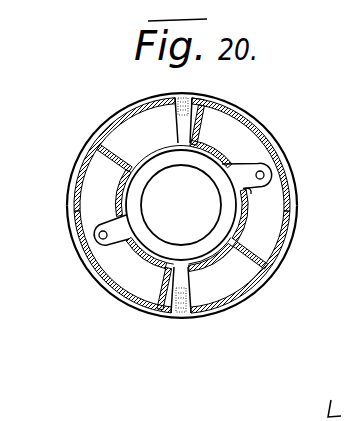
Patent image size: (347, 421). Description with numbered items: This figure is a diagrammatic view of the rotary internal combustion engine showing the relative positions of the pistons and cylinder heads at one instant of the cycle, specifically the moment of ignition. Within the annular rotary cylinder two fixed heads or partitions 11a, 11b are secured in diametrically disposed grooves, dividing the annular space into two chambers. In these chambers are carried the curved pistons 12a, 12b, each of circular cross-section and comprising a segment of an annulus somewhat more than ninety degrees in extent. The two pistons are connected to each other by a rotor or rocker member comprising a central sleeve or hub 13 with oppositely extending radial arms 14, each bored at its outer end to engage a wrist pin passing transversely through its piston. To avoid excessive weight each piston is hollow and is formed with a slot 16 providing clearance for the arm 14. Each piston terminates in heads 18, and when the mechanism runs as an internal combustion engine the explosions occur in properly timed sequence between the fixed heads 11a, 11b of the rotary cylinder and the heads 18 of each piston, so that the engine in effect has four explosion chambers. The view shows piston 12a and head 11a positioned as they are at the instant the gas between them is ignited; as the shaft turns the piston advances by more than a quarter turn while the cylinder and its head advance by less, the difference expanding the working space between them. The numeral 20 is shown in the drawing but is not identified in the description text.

The head 11a is at (176, 103).
The head 11b is at (194, 288).
The curved piston 12a is at (250, 147).
The curved piston 12b is at (123, 276).
The sleeve or hub 13 is at (204, 245).
The radial arm 14 is at (110, 224).
The slot 16 is at (252, 191).
The piston head 18 is at (117, 157).
The gap between slot and spoke 20 is at (202, 98).